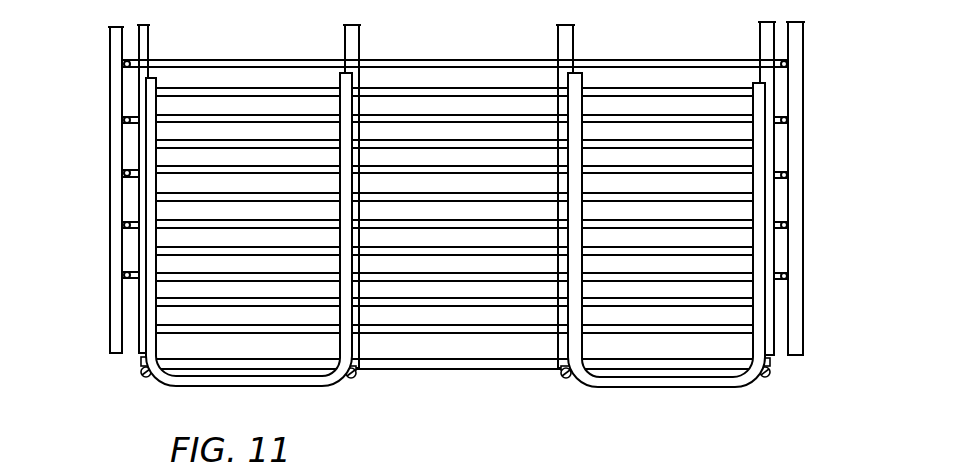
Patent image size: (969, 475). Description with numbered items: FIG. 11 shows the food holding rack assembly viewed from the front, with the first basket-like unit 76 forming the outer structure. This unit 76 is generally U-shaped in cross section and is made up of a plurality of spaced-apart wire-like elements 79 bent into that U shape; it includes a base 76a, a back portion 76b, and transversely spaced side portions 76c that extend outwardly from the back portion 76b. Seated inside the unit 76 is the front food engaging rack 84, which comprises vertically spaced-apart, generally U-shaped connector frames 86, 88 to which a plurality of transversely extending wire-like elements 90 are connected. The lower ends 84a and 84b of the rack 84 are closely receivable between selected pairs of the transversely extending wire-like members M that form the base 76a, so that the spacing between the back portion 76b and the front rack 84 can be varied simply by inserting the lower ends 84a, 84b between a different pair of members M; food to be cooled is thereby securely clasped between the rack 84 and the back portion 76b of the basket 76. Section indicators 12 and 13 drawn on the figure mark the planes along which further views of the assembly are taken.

The first basket-like unit 76 is at (99, 67).
The base 76a is at (506, 56).
The back portion 76b is at (414, 422).
The side portions 76c is at (104, 210).
The wire-like elements 79 is at (240, 170).
The front food engaging rack 84 is at (196, 391).
The lower end of rack 84a is at (280, 388).
The lower end of rack 84b is at (745, 379).
The hinge pin 86 is at (152, 103).
The U-shaped connector frame 88 is at (758, 135).
The wire-like elements 90 is at (418, 197).
The wire-like members M is at (393, 368).
The section line 12 is at (100, 313).
The section line 13 is at (639, 282).